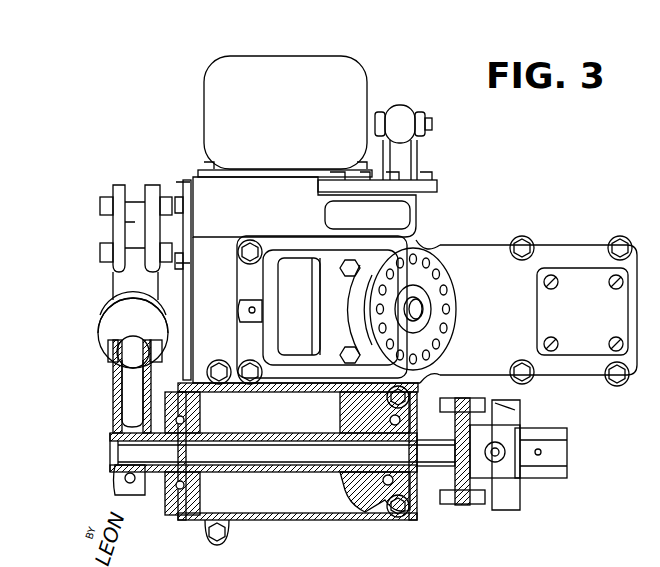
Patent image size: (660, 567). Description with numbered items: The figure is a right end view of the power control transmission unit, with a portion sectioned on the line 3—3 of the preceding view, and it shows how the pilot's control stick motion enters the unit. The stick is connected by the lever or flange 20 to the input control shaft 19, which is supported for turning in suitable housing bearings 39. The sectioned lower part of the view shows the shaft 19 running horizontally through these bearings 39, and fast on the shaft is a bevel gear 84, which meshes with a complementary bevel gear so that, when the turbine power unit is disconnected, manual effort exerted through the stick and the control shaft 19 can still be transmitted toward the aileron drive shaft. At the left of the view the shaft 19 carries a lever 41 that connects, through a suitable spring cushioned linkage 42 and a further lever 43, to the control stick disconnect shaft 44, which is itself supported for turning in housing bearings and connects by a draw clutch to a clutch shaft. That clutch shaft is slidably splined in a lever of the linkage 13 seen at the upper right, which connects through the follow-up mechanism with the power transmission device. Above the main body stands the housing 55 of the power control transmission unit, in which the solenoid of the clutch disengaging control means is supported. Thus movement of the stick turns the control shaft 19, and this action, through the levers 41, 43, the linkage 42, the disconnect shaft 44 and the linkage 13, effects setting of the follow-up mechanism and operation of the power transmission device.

The section line 3— 3 is at (466, 295).
The linkage 13 is at (426, 106).
The input control shaft 19 is at (233, 433).
The lever or flange 20 is at (479, 519).
The housing bearings 39 is at (193, 485).
The lever 41 is at (113, 397).
The spring cushioned linkage 42 is at (91, 321).
The lever 43 is at (113, 270).
The control stick disconnect shaft 44 is at (177, 220).
The housing 55 is at (368, 79).
The bevel gear 84 is at (375, 505).